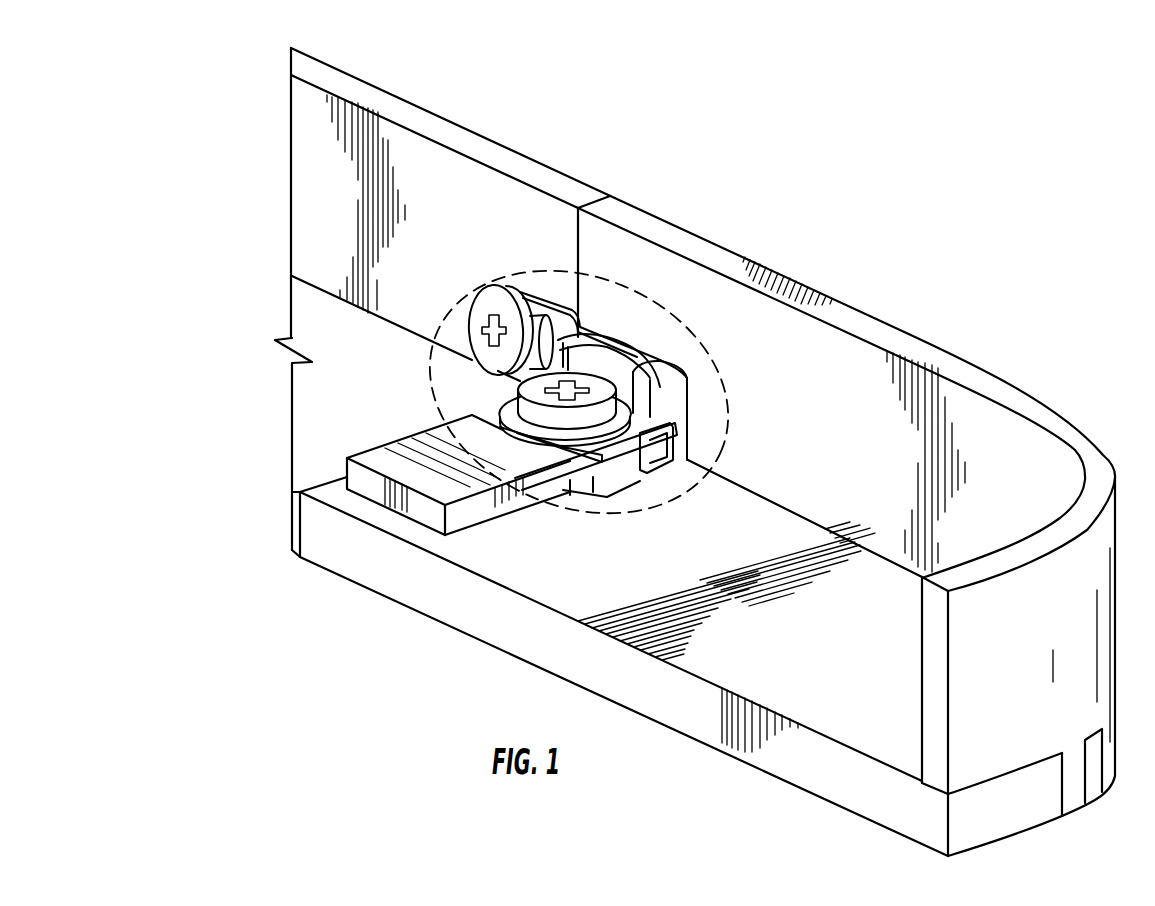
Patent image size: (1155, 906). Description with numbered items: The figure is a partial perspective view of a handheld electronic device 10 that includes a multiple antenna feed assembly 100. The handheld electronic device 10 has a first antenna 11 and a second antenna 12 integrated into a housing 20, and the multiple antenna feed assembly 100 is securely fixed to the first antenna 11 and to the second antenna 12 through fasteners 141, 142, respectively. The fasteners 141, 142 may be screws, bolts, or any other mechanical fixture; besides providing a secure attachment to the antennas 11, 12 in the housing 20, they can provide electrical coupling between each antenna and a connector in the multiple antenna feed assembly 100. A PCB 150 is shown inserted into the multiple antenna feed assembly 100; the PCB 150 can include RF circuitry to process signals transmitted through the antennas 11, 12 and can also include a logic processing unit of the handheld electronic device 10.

The handheld electronic device 10 is at (196, 147).
The first antenna 11 is at (412, 116).
The second antenna 12 is at (680, 244).
The housing 20 is at (320, 426).
The multiple antenna feed assembly 100 is at (725, 414).
The fastener 141 is at (483, 300).
The fastener 142 is at (603, 388).
The PCB 150 is at (512, 506).